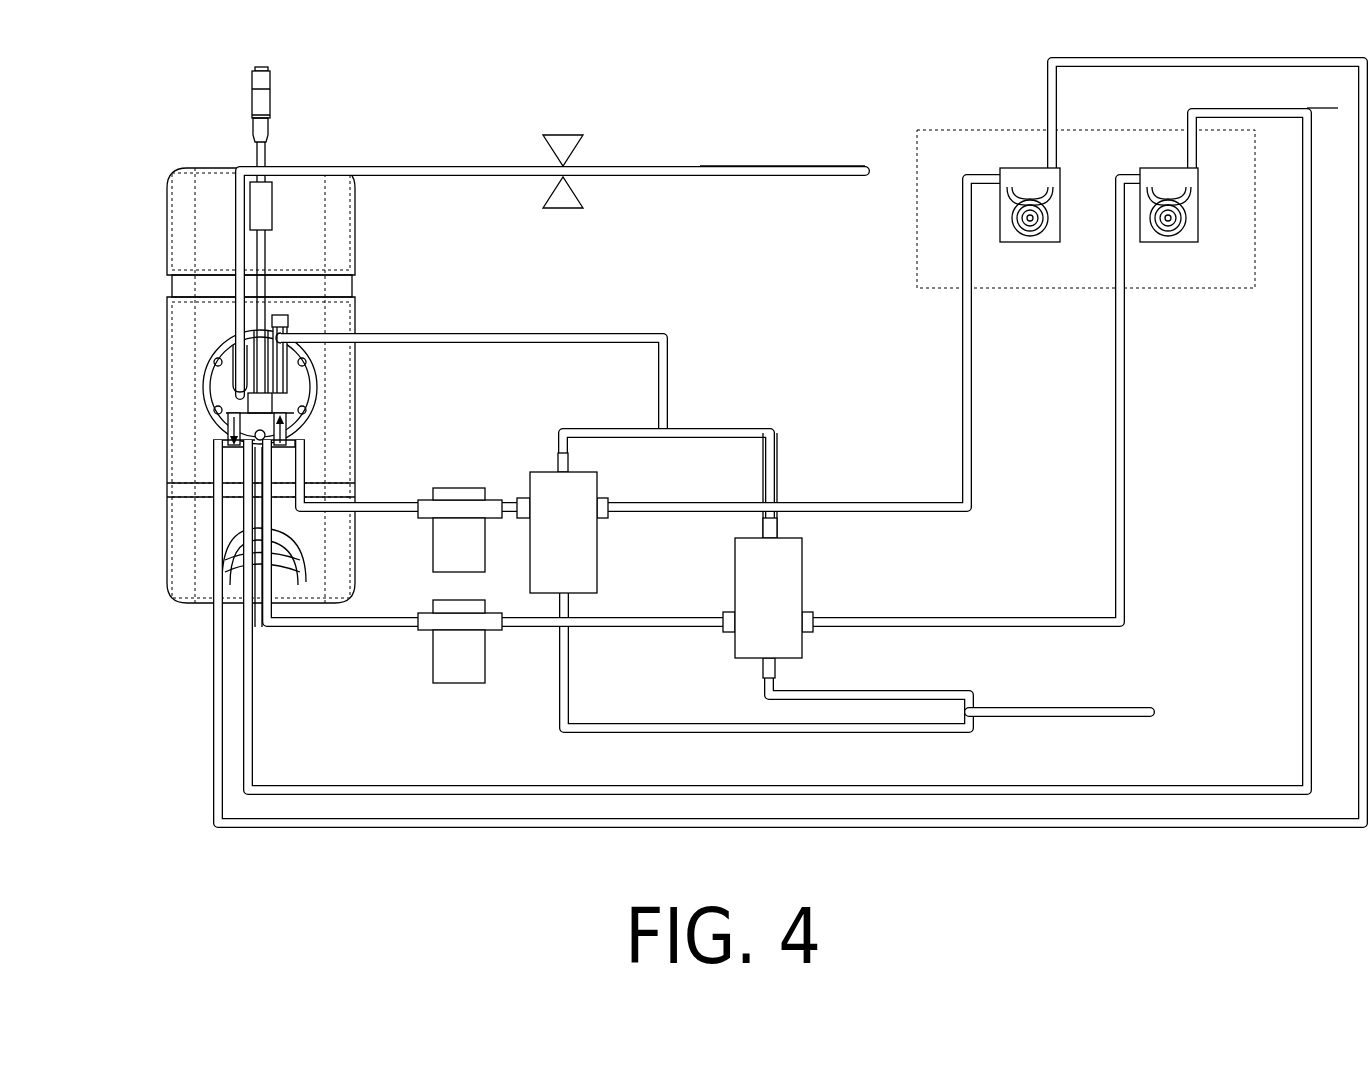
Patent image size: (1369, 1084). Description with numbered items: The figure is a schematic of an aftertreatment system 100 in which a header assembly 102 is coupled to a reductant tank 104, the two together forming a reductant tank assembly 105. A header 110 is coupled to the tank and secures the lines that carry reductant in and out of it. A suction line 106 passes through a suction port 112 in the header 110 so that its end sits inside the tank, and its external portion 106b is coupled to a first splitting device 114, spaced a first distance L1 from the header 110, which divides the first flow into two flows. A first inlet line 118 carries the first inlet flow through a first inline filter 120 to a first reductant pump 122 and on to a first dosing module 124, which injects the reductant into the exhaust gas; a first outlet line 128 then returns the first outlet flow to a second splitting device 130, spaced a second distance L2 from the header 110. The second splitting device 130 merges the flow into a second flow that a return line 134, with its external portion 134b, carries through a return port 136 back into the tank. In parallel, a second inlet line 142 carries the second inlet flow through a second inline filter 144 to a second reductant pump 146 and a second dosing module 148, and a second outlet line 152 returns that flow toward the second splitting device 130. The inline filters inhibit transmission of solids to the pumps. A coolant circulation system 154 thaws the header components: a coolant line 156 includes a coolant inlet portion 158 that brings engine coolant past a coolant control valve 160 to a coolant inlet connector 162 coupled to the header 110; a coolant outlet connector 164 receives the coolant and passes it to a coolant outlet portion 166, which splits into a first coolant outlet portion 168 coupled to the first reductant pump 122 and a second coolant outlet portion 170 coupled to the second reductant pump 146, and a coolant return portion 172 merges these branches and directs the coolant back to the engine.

The aftertreatment system 100 is at (145, 105).
The header assembly 102 is at (178, 317).
The reductant tank 104 is at (167, 197).
The reductant tank assembly 105 is at (142, 258).
The suction line 106 is at (290, 408).
The external portion of the suction line 106b is at (300, 430).
The header 110 is at (212, 367).
The suction port 112 is at (300, 388).
The first splitting device 114 is at (290, 440).
The first inlet line 118 is at (388, 513).
The first inline filter 120 is at (438, 553).
The first reductant pump 122 is at (598, 555).
The first dosing module 124 is at (1052, 242).
The first outlet line 128 is at (1047, 92).
The second splitting device 130 is at (228, 445).
The return line 134 is at (226, 428).
The external portion of the return line 134b is at (226, 421).
The return port 136 is at (226, 405).
The second inlet line 142 is at (348, 628).
The second inline filter 144 is at (443, 665).
The second reductant pump 146 is at (803, 568).
The second dosing module 148 is at (1190, 242).
The second outlet line 152 is at (1270, 108).
The coolant circulation system 154 is at (465, 105).
The coolant line 156 is at (401, 182).
The coolant inlet portion 158 is at (745, 177).
The coolant control valve 160 is at (563, 210).
The coolant inlet connector 162 is at (232, 350).
The coolant outlet connector 164 is at (290, 345).
The coolant outlet portion 166 is at (497, 345).
The first coolant outlet portion 168 is at (608, 428).
The second coolant outlet portion 170 is at (726, 428).
The coolant return portion 172 is at (1102, 705).
The first distance L1 is at (290, 432).
The second distance L2 is at (224, 442).